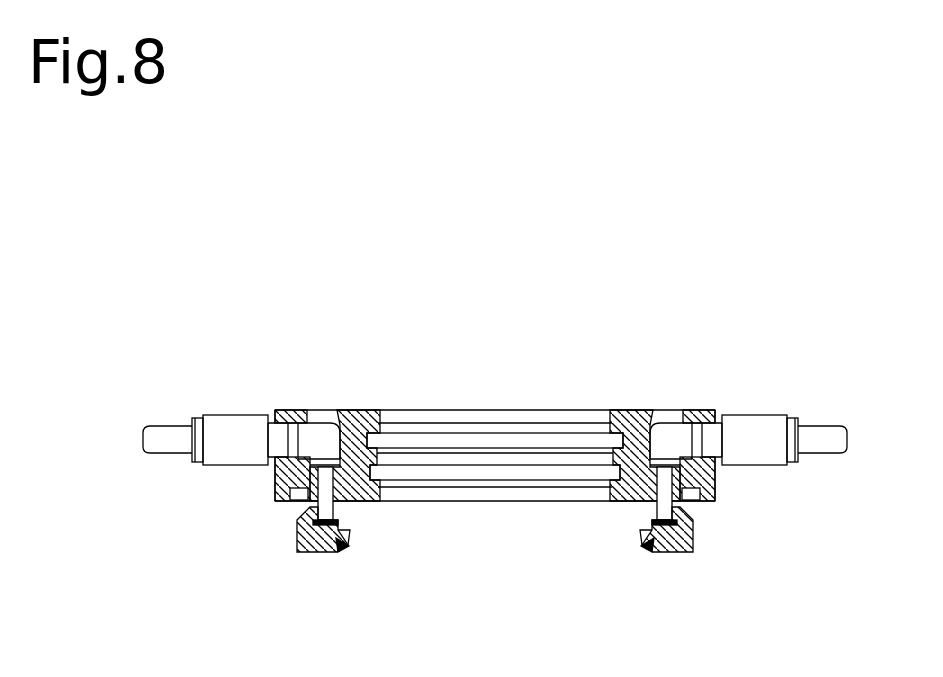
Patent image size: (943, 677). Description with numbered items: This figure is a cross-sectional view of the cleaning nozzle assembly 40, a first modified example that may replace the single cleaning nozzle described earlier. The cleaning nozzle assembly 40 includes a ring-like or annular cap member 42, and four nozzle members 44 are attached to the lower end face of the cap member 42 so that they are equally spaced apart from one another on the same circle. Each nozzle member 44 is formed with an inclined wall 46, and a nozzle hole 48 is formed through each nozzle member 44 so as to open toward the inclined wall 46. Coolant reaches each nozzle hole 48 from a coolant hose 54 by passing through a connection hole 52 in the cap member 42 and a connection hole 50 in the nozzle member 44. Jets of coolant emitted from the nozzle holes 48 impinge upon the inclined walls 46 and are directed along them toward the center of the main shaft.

The cleaning nozzle assembly 40 is at (726, 384).
The cap member 42 is at (628, 418).
The nozzle member 44 is at (313, 552).
The inclined wall 46 is at (347, 540).
The nozzle hole 48 is at (350, 532).
The connection hole 50 is at (323, 503).
The connection hole 52 is at (312, 438).
The coolant hose 54 is at (167, 432).